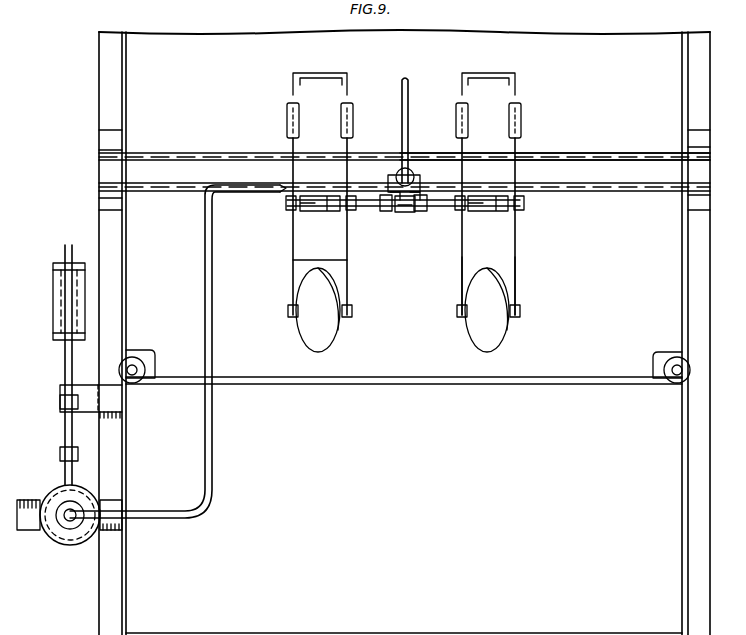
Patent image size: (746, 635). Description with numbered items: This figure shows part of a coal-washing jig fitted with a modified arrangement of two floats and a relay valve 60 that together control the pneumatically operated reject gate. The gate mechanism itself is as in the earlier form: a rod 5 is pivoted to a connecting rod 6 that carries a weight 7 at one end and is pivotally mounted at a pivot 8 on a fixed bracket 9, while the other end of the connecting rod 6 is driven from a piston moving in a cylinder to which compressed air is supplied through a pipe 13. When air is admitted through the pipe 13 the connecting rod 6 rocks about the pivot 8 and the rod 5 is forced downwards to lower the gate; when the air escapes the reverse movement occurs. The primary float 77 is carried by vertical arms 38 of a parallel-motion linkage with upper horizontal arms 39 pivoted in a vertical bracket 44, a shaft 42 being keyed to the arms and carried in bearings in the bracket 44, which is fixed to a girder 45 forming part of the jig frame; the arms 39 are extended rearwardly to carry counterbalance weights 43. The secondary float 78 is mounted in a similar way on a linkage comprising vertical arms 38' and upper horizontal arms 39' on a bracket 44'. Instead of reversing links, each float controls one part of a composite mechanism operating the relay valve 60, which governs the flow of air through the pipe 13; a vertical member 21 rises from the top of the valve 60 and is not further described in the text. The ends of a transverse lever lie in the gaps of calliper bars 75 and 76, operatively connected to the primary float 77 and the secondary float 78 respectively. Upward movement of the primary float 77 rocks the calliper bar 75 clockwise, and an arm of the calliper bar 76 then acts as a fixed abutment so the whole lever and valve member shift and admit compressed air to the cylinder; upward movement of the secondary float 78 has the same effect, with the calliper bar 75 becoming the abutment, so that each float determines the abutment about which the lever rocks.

The rod 5 is at (60, 454).
The connecting rod 6 is at (65, 433).
The weight 7 is at (57, 298).
The pivot 8 is at (60, 402).
The fixed bracket 9 is at (88, 398).
The pipe 13 is at (212, 487).
The rod 21 is at (402, 135).
The vertical arms 38 is at (317, 298).
The vertical arms 38' is at (489, 295).
The upper horizontal arms 39 is at (334, 260).
The upper horizontal arms 39' is at (504, 274).
The shaft 42 is at (320, 211).
The counterbalance weights 43 is at (334, 126).
The vertical bracket 44 is at (304, 205).
The bracket 44' is at (503, 208).
The girder 45 is at (565, 178).
The relay valve 60 is at (421, 165).
The calliper bar 75 is at (422, 206).
The calliper bar 76 is at (386, 207).
The primary float 77 is at (322, 342).
The secondary float 78 is at (480, 322).